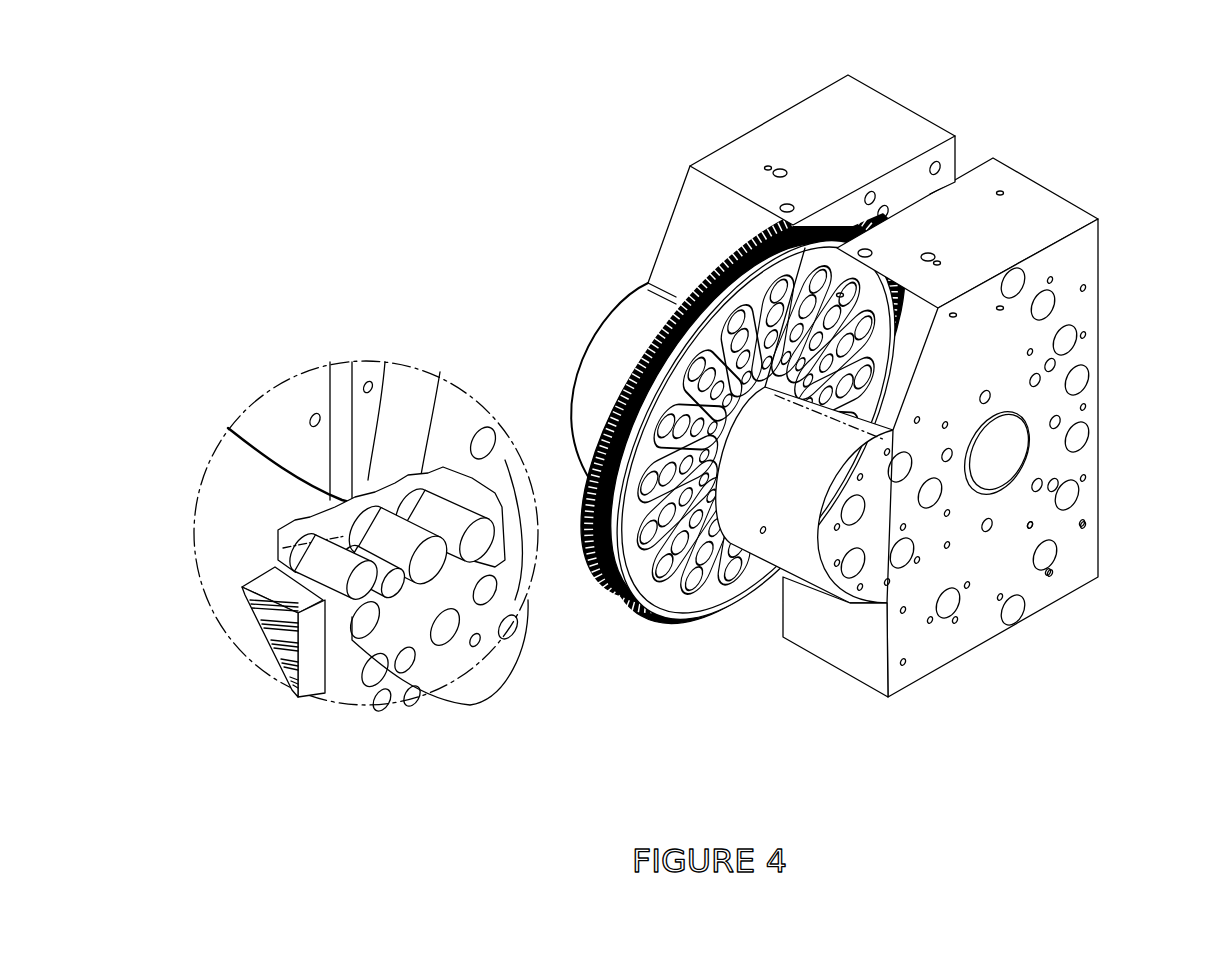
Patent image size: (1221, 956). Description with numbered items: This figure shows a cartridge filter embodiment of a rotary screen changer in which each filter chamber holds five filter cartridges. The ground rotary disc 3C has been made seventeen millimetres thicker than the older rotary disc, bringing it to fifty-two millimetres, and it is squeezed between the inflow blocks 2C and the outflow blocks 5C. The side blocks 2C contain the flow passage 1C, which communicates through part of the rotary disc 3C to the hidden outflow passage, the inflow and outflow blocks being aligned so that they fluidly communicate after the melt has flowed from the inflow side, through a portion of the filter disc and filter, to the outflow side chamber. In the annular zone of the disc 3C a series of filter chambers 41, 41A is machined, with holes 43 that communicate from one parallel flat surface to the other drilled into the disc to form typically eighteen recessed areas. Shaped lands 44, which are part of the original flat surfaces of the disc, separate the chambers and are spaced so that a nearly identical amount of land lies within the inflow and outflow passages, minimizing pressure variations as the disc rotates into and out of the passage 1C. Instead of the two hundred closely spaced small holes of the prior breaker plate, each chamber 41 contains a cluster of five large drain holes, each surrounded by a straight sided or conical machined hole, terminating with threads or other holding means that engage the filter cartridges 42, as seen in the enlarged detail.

The outflow block 5C is at (847, 132).
The inflow block 2C is at (1003, 223).
The flow passage 1C is at (1003, 450).
The rotary disc 3C is at (695, 607).
The filter chamber 41 is at (665, 568).
The filter chamber 41A is at (405, 687).
The filter cartridge 42 is at (256, 653).
The holes 43 is at (281, 534).
The lands 44 is at (405, 623).